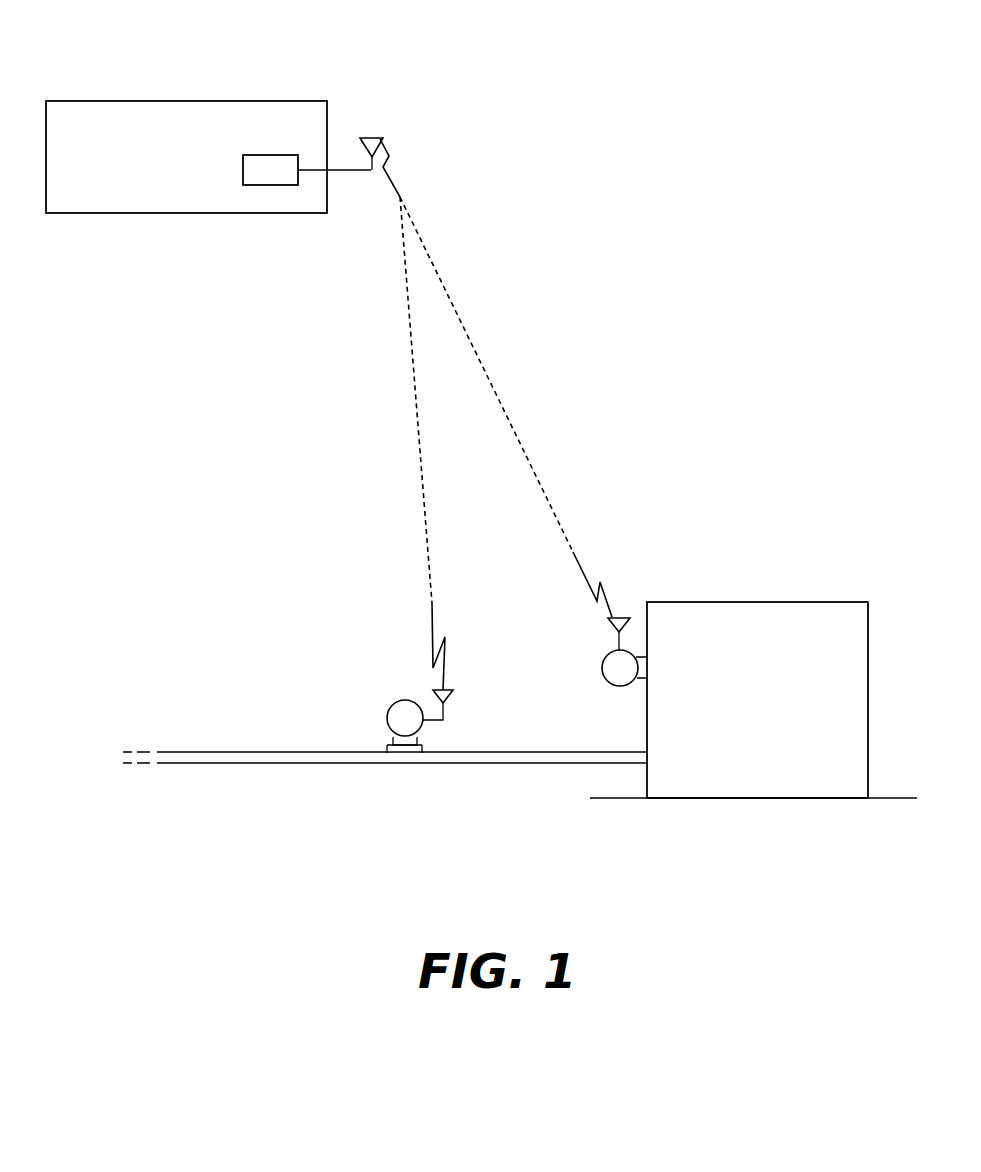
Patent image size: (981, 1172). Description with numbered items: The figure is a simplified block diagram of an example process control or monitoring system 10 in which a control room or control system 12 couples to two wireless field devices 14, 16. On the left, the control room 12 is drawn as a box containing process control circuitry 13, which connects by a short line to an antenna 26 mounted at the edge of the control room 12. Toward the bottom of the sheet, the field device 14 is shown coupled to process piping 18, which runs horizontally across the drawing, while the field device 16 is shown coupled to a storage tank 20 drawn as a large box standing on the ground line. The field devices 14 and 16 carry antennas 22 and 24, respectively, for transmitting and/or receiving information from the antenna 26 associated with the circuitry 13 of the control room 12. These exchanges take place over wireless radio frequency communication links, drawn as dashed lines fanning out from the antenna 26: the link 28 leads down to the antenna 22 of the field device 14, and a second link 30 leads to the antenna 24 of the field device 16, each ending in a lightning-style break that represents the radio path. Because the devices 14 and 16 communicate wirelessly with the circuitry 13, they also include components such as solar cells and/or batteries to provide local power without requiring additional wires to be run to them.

The process control or monitoring system 10 is at (666, 281).
The control room 12 is at (178, 101).
The process control circuitry 13 is at (265, 186).
The field device 14 is at (388, 710).
The field device 16 is at (602, 669).
The process piping 18 is at (322, 765).
The storage tank 20 is at (737, 612).
The antenna 22 is at (450, 698).
The antenna 24 is at (607, 627).
The antenna 26 is at (382, 137).
The wireless radio frequency communication link 28 is at (418, 440).
The wireless communication link 30 is at (515, 432).